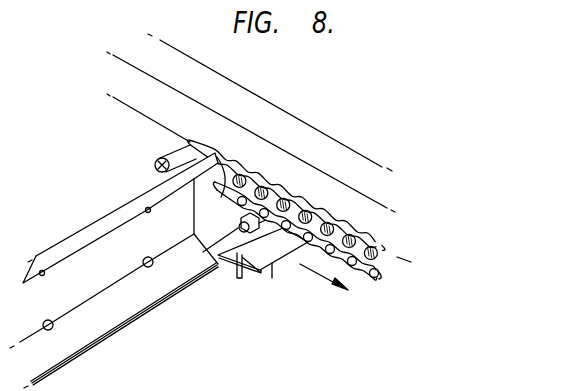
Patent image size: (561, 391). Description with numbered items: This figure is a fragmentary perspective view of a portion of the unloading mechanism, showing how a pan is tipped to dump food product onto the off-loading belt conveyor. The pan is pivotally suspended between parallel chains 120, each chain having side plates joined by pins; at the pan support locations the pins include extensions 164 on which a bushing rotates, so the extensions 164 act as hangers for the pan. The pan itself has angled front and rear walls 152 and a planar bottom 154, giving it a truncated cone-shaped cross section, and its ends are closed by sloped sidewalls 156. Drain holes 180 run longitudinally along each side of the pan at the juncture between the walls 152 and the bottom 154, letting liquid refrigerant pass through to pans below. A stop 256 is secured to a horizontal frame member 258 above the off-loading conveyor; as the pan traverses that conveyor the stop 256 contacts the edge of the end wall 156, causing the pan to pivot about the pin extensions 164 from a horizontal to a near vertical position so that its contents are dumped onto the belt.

The chains 120 is at (259, 192).
The front and rear walls 152 is at (131, 308).
The planar bottom 154 is at (114, 263).
The sidewalls 156 is at (167, 186).
The pin extensions 164 is at (239, 283).
The drain holes 180 is at (117, 269).
The stop 256 is at (265, 267).
The horizontal frame member 258 is at (251, 123).